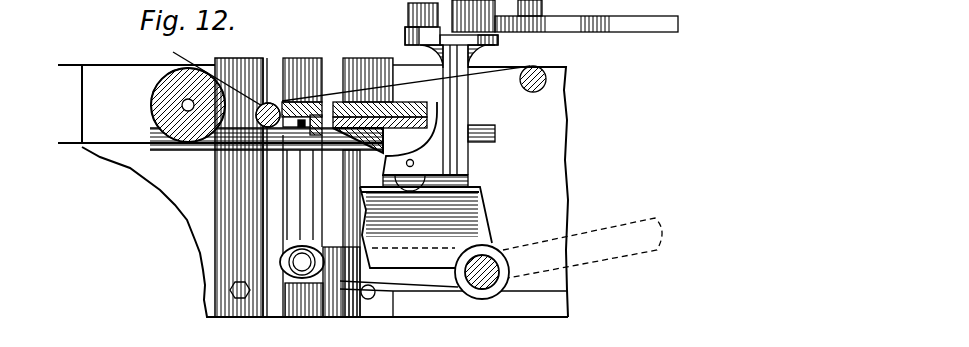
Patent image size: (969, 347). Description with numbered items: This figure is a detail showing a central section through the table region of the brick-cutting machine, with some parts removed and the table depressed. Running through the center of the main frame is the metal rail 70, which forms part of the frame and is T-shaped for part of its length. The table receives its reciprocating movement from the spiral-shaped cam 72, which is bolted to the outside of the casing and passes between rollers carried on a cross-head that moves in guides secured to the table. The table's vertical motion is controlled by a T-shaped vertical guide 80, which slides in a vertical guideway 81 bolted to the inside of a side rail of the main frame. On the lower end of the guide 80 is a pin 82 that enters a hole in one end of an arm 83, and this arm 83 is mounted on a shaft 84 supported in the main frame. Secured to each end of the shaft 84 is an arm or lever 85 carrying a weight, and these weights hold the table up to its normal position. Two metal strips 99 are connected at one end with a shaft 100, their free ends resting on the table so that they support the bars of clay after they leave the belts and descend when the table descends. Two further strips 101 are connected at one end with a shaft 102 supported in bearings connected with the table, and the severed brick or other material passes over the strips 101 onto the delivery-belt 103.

The metal rail 70 is at (426, 227).
The spiral-shaped cam 72 is at (443, 89).
The T-shaped vertical guide 80 is at (297, 215).
The vertical guideway 81 is at (250, 197).
The pin 82 is at (305, 255).
The arm 83 is at (445, 282).
The shaft 84 is at (497, 284).
The arm or lever 85 is at (620, 33).
The metal strips 99 is at (497, 70).
The shaft 100 is at (537, 91).
The metal strips 101 is at (203, 68).
The shaft 102 is at (270, 103).
The delivery-belt 103 is at (130, 64).